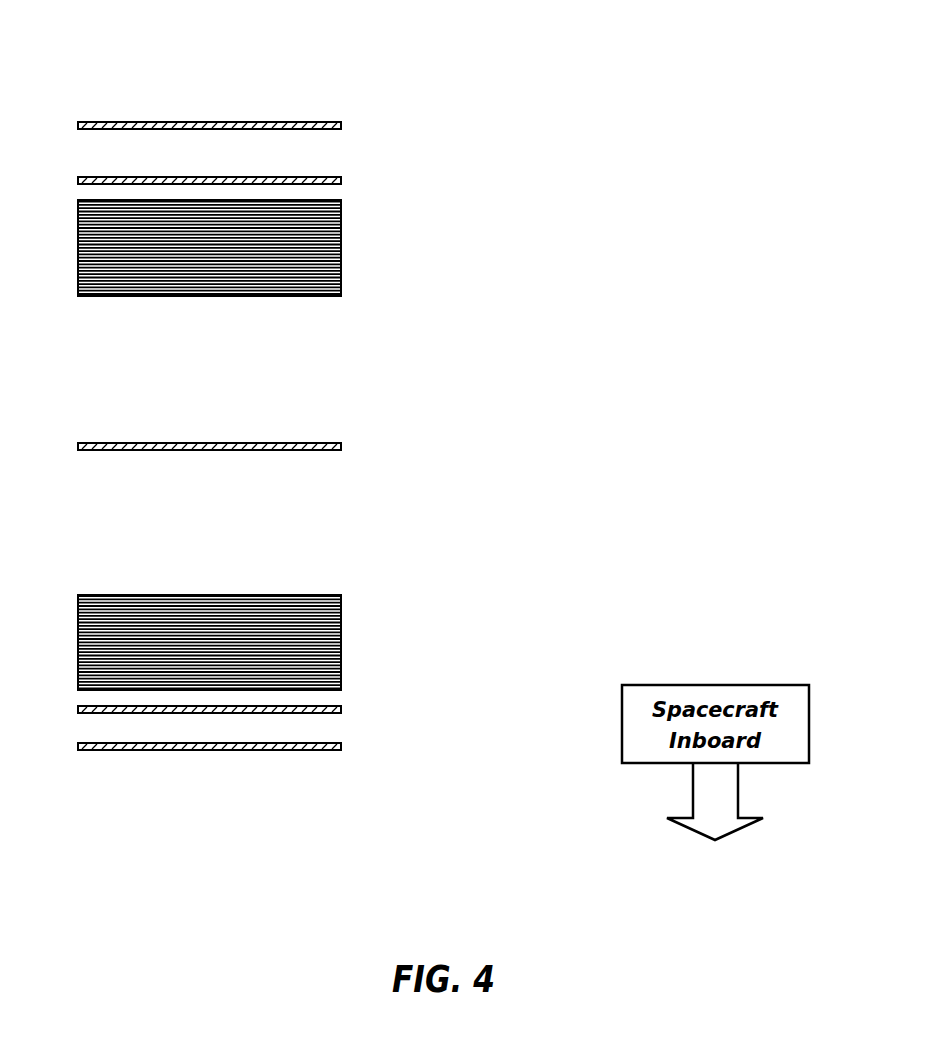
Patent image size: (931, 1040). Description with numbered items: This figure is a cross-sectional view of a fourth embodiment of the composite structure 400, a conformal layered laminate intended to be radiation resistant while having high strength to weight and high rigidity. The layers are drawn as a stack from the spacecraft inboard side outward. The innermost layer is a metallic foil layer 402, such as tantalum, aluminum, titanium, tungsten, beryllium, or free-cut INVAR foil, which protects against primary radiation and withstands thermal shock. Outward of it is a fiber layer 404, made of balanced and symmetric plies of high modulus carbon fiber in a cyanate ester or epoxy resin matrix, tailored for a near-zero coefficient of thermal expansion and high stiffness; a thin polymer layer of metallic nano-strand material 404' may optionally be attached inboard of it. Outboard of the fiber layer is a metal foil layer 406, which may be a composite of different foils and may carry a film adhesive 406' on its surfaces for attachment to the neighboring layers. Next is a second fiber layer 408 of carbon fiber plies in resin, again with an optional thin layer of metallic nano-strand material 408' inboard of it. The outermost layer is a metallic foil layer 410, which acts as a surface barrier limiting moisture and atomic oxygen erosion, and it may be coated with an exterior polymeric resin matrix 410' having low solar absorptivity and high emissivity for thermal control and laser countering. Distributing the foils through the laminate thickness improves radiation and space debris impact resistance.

The composite structure 400 is at (562, 110).
The metallic foil layer 402 is at (341, 746).
The fiber layer 404 is at (257, 642).
The metallic nano-strand material layer 404' is at (266, 694).
The metal foil layer 406 is at (258, 433).
The film adhesive layer 406' is at (264, 436).
The fiber layer 408 is at (257, 248).
The metallic nano-strand material layer 408' is at (261, 168).
The metallic foil layer 410 is at (257, 112).
The exterior polymeric resin matrix 410' is at (210, 87).